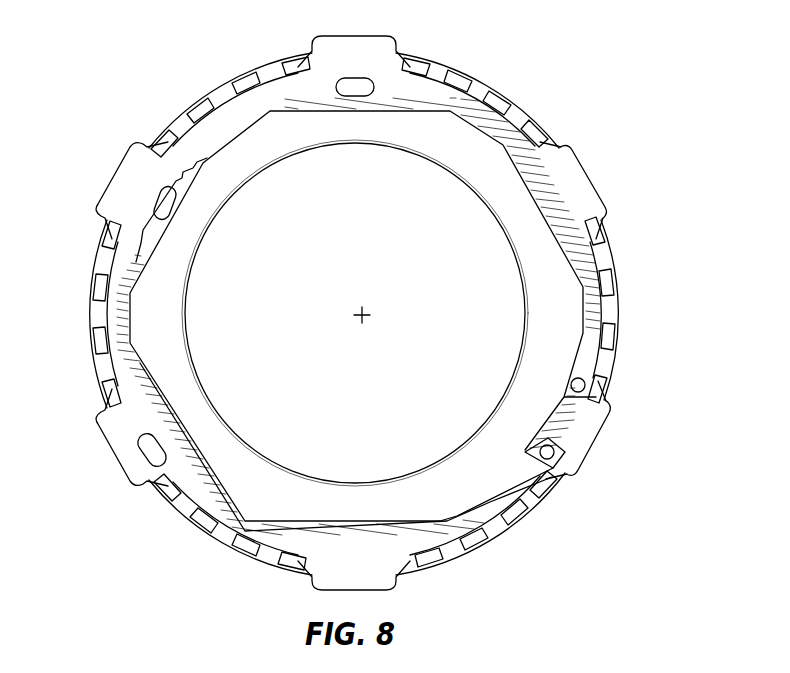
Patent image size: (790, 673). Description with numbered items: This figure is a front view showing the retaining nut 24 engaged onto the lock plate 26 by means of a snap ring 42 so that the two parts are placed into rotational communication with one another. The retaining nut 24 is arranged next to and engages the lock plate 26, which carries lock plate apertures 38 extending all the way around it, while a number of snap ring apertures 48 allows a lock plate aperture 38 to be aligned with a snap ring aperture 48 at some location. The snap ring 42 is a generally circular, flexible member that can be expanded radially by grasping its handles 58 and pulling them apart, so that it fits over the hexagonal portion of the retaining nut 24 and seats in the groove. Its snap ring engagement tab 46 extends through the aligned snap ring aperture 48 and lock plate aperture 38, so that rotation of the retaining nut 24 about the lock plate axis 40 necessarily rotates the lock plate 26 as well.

The retaining nut 24 is at (576, 161).
The lock plate 26 is at (447, 64).
The lock plate aperture 38 is at (508, 111).
The lock plate axis 40 is at (360, 313).
The snap ring 42 is at (583, 368).
The snap ring engagement tab 46 is at (163, 210).
The snap ring aperture 48 is at (352, 92).
The handle 58 is at (548, 458).